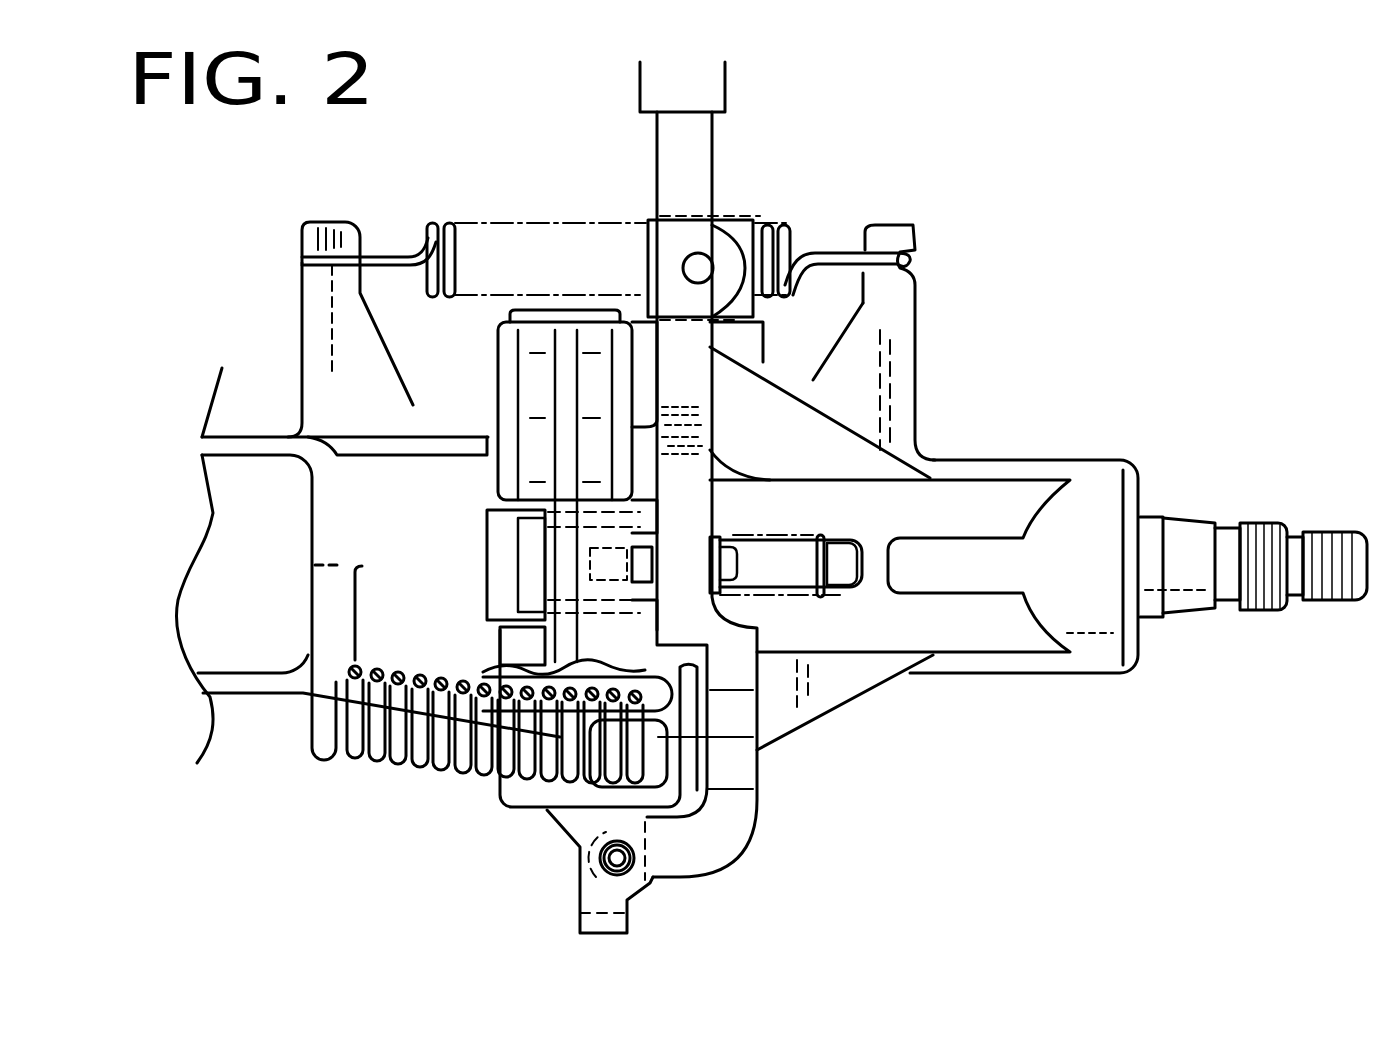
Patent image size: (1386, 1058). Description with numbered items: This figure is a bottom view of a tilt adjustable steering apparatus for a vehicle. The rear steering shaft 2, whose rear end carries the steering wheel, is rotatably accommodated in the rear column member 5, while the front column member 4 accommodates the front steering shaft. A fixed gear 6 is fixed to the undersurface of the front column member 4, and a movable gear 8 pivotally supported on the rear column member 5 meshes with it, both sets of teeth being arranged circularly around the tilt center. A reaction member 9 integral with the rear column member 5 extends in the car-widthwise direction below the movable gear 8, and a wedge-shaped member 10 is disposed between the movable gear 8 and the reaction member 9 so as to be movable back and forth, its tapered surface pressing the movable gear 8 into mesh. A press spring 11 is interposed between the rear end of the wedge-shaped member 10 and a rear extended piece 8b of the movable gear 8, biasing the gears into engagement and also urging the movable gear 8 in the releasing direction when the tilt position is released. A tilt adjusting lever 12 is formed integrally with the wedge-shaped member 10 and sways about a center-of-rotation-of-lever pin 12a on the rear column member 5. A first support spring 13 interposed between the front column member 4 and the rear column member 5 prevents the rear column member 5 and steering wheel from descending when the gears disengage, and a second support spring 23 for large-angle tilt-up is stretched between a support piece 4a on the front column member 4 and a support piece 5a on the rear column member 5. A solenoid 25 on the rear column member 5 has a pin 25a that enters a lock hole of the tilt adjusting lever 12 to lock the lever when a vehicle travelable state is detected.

The rear steering shaft 2 is at (1197, 517).
The front column member 4 is at (262, 432).
The support piece 4a is at (397, 355).
The rear column member 5 is at (1015, 460).
The support piece 5a is at (917, 313).
The fixed gear 6 is at (488, 523).
The movable gear 8 is at (515, 557).
The rear extended piece 8b is at (843, 573).
The reaction member 9 is at (493, 475).
The wedge-shaped member 10 is at (543, 577).
The press spring 11 is at (822, 537).
The tilt adjusting lever 12 is at (713, 157).
The center-of-rotation-of-lever pin 12a is at (630, 863).
The first support spring 13 is at (413, 767).
The second support spring 23 is at (443, 223).
The solenoid 25 is at (732, 217).
The pin 25a is at (687, 267).